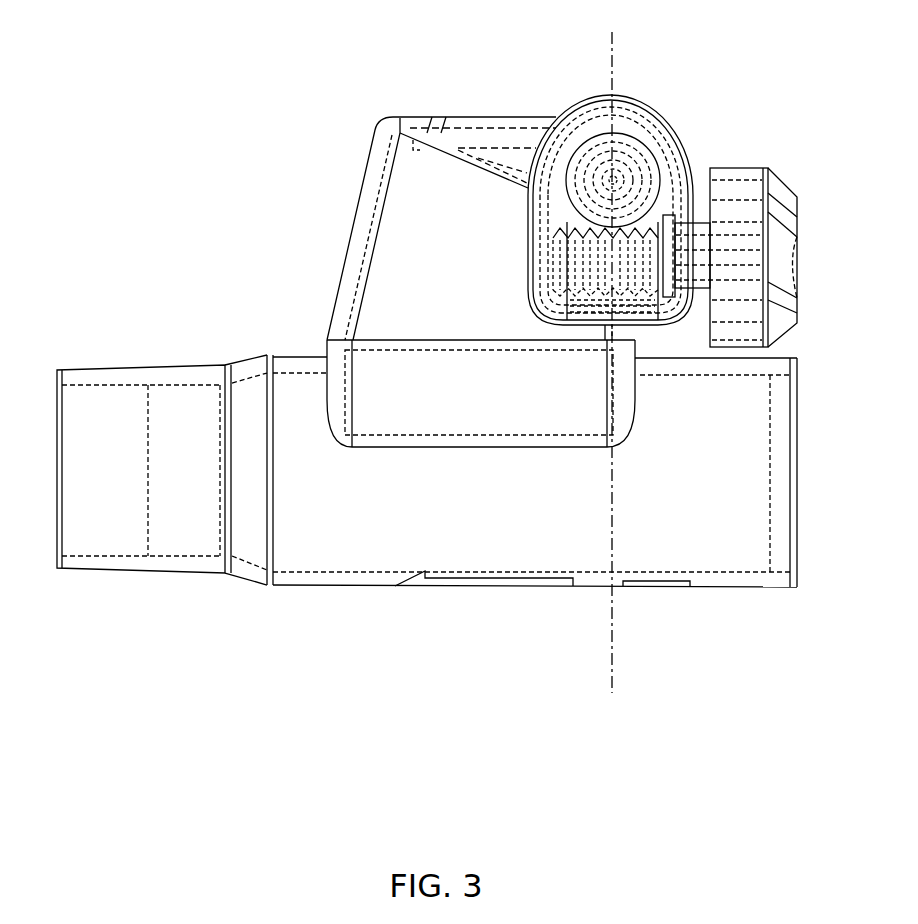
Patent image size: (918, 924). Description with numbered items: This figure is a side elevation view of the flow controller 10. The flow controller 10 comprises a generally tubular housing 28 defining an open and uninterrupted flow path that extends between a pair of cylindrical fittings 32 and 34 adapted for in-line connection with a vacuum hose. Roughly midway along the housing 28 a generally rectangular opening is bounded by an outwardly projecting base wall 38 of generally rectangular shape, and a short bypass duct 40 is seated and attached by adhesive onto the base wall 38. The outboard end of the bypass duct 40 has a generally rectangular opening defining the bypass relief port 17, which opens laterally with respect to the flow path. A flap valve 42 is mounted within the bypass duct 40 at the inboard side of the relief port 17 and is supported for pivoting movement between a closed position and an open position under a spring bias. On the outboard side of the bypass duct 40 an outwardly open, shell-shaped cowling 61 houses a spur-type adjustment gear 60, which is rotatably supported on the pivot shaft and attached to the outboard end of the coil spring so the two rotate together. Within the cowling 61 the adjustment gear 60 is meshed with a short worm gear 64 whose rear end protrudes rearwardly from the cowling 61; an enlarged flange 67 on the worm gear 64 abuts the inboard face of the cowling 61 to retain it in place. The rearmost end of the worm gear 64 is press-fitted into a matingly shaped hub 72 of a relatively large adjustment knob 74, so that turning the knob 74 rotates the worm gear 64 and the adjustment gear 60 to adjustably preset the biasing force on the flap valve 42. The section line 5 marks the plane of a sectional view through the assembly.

The section line 5- 5 is at (612, 32).
The flow controller 10 is at (284, 707).
The bypass relief port 17 is at (432, 105).
The tubular housing 28 is at (495, 562).
The cylindrical fitting 32 is at (102, 563).
The cylindrical fitting 34 is at (778, 588).
The base wall 38 is at (398, 425).
The bypass duct 40 is at (397, 213).
The flap valve 42 is at (498, 108).
The adjustment gear 60 is at (693, 146).
The cowling 61 is at (531, 220).
The worm gear 64 is at (597, 338).
The flange 67 is at (672, 282).
The hub 72 is at (700, 237).
The adjustment knob 74 is at (797, 195).